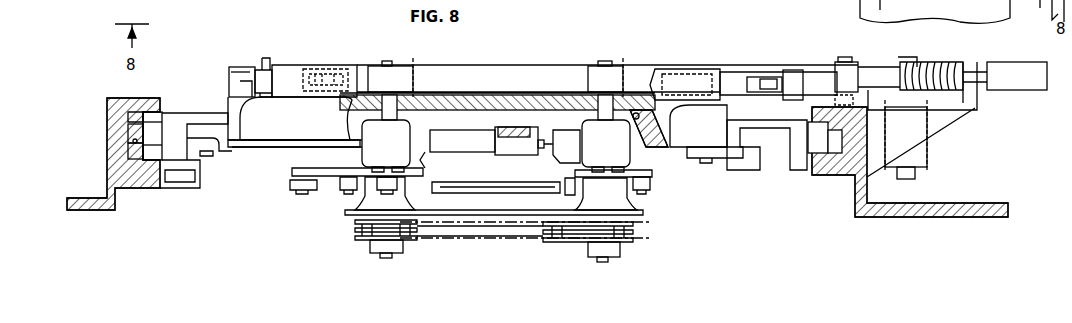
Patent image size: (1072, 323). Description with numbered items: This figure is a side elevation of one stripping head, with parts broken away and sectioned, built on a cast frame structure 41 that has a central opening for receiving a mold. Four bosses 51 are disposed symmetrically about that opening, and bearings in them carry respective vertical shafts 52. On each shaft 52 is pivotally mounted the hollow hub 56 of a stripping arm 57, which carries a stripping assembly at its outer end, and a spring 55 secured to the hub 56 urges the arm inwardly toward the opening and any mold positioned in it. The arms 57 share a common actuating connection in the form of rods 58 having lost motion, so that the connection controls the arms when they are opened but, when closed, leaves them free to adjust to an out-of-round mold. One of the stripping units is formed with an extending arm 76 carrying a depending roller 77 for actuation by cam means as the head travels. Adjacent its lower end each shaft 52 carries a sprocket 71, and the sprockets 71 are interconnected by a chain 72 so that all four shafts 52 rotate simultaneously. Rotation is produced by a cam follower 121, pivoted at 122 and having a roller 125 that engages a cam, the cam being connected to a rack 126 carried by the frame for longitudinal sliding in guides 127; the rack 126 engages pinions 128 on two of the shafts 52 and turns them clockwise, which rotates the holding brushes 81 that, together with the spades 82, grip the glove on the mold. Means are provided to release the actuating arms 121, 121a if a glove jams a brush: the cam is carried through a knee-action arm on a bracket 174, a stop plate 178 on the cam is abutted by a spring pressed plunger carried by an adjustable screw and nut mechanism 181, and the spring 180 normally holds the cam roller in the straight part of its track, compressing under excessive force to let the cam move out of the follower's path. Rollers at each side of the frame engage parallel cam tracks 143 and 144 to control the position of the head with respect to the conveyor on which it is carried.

The cast frame structure 41 is at (294, 114).
The bosses 51 is at (431, 68).
The vertical shafts 52 is at (386, 62).
The spring 55 is at (652, 110).
The hollow hub 56 is at (496, 146).
The stripping arm 57 is at (440, 160).
The rods 58 is at (506, 172).
The sprocket 71 is at (370, 245).
The chain 72 is at (566, 242).
The extending arm 76 is at (332, 168).
The depending roller 77 is at (286, 182).
The holding brushes 81 is at (515, 128).
The spades 82 is at (535, 135).
The cam follower 121 is at (744, 70).
The actuating arm 121a is at (229, 76).
The pivot 122 is at (237, 66).
The roller 125 is at (812, 80).
The rack 126 is at (716, 64).
The guides 127 is at (302, 68).
The pinions 128 is at (408, 64).
The cam track 143 is at (150, 115).
The cam track 144 is at (133, 141).
The bracket 174 is at (966, 110).
The stop plate 178 is at (906, 139).
The spring 180 is at (926, 50).
The adjustable screw and nut mechanism 181 is at (1030, 86).